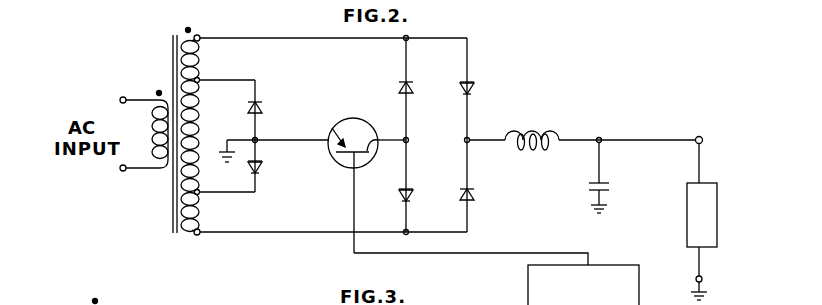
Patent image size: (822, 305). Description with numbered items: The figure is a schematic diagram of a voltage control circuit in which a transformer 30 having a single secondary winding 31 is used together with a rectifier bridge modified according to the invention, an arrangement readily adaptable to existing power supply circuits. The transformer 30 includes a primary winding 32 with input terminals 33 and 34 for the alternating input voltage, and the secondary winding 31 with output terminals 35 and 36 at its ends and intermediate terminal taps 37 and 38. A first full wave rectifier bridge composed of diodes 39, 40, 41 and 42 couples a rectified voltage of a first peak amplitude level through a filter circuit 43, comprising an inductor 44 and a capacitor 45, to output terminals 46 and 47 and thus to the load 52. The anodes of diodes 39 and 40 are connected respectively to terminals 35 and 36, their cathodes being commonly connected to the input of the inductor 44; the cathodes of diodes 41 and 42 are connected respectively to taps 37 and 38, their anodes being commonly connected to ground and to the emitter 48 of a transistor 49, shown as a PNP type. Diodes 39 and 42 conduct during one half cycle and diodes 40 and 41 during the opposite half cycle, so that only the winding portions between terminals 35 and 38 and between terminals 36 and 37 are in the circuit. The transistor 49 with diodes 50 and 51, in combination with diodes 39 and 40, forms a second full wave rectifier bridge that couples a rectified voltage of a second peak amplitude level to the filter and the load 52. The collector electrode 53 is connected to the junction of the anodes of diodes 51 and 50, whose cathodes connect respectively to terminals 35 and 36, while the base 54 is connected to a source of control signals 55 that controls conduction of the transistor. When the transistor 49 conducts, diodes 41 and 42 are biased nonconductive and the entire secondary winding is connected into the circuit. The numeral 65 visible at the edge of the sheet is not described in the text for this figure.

In FIG. 2, the transformer 30 is at (187, 29).
In FIG. 2, the secondary winding 31 is at (192, 114).
In FIG. 2, the primary winding 32 is at (154, 145).
In FIG. 2, the input terminal 33 is at (123, 97).
In FIG. 2, the input terminal 34 is at (123, 171).
In FIG. 2, the output terminal 35 is at (213, 29).
In FIG. 2, the output terminal 36 is at (200, 235).
In FIG. 2, the intermediate terminal tap 37 is at (200, 78).
In FIG. 2, the intermediate terminal tap 38 is at (200, 194).
In FIG. 2, the diode 39 is at (474, 87).
In FIG. 2, the diode 40 is at (474, 194).
In FIG. 2, the diode 41 is at (262, 106).
In FIG. 2, the diode 42 is at (262, 167).
In FIG. 2, the filter circuit 43 is at (582, 159).
In FIG. 2, the inductor 44 is at (532, 124).
In FIG. 2, the capacitor 45 is at (611, 186).
In FIG. 2, the output terminal 46 is at (699, 136).
In FIG. 2, the output terminal 47 is at (703, 277).
In FIG. 2, the emitter 48 is at (333, 128).
In FIG. 2, the transistor 49 is at (358, 171).
In FIG. 2, the diode 50 is at (400, 194).
In FIG. 2, the diode 51 is at (413, 86).
In FIG. 2, the load 52 is at (717, 215).
In FIG. 2, the collector electrode 53 is at (378, 148).
In FIG. 2, the base 54 is at (352, 166).
In FIG. 2, the source of control signals 55 is at (639, 301).
In FIG. 3, the circuit element (FIG. 3) 65 is at (112, 302).